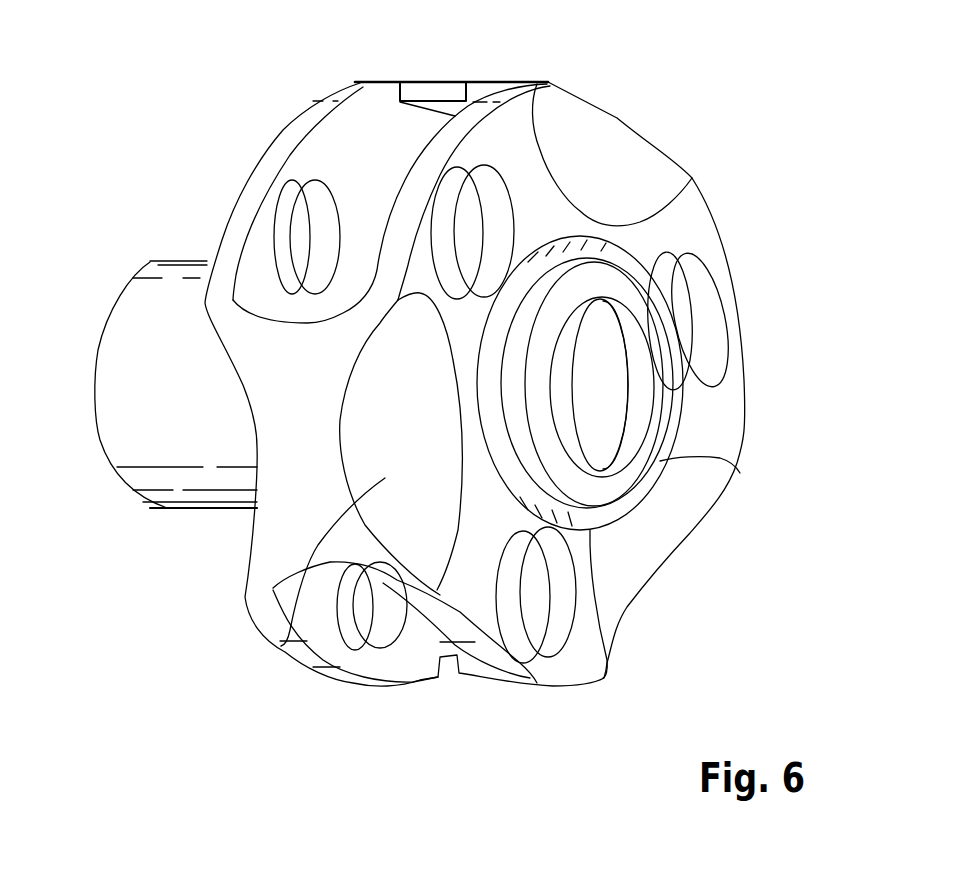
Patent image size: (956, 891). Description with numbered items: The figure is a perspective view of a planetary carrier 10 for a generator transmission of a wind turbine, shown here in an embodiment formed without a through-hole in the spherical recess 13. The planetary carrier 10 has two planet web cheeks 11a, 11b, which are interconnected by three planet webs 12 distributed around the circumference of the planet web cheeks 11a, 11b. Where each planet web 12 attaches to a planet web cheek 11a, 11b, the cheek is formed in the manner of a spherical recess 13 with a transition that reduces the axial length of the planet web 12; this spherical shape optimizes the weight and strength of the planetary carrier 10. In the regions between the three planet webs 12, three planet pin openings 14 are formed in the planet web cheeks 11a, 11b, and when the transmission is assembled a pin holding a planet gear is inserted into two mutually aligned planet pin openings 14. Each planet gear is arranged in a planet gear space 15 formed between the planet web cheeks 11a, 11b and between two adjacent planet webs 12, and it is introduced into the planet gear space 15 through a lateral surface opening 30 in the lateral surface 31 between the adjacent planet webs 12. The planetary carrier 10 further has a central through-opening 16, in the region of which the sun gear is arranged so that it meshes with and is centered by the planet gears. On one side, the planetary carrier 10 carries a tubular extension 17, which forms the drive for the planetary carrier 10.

The planetary carrier 10 is at (410, 780).
The planet web cheek 11a is at (243, 207).
The planet web cheek 11b is at (517, 140).
The planet web 12 is at (611, 110).
The spherical recess 13 is at (633, 163).
The planet pin opening 14 is at (461, 168).
The planet gear space 15 is at (320, 310).
The through-opening 16 is at (600, 393).
The extension 17 is at (117, 373).
The lateral surface opening 30 is at (351, 82).
The lateral surface 31 is at (287, 483).